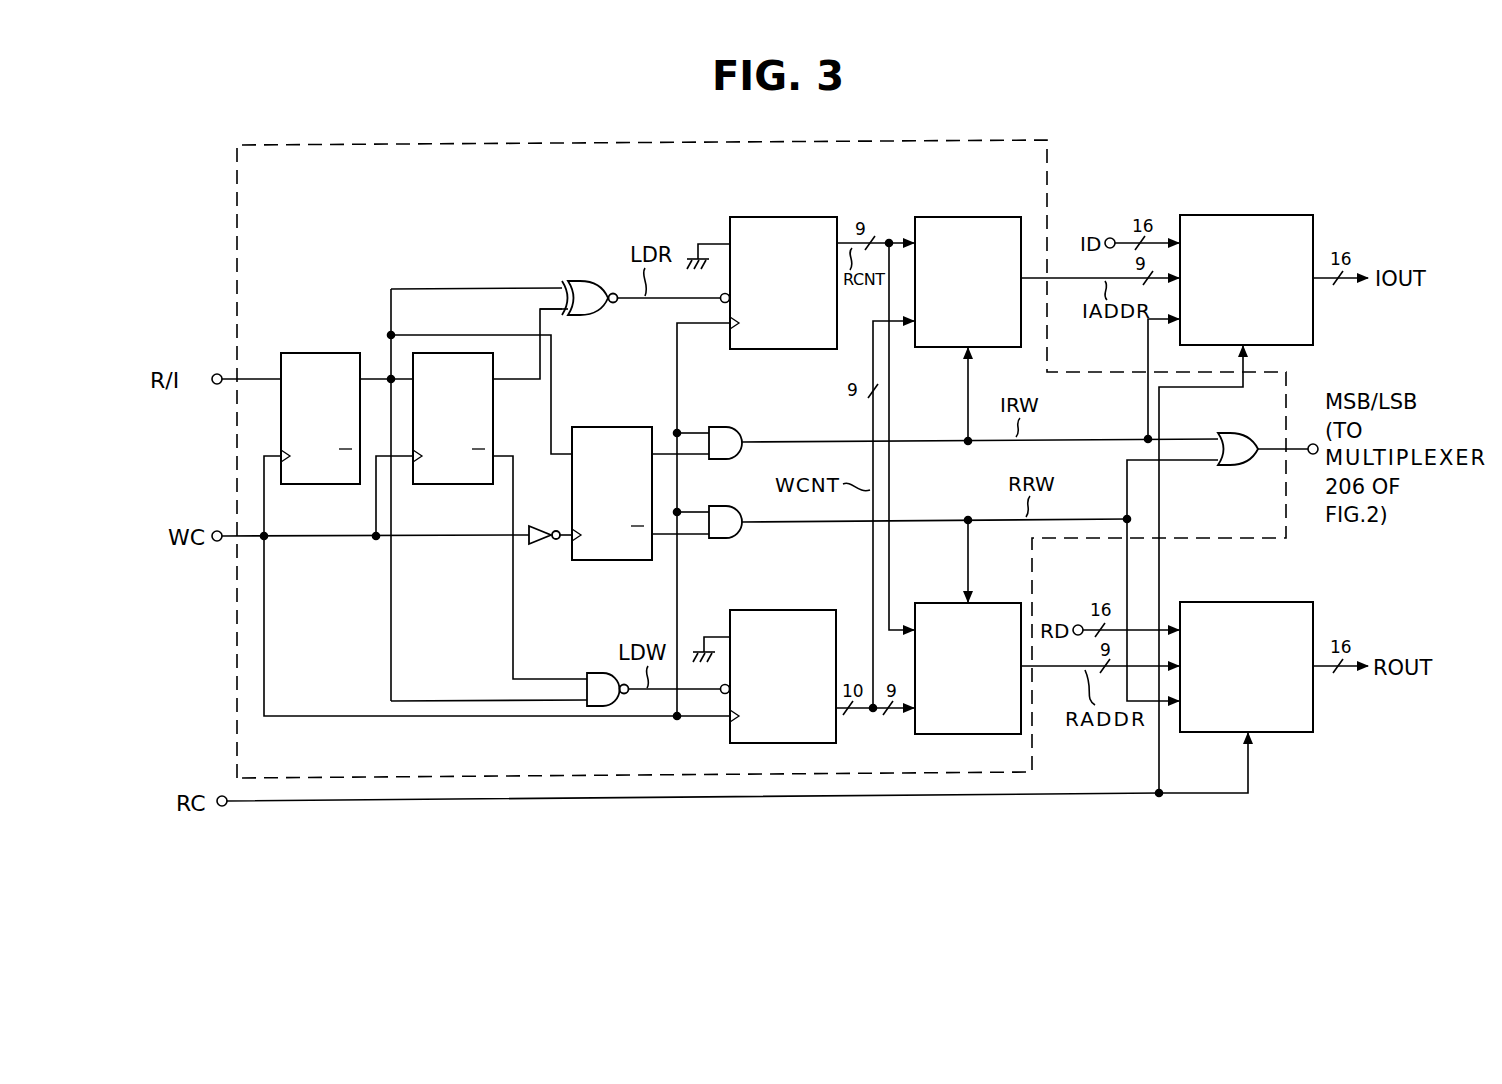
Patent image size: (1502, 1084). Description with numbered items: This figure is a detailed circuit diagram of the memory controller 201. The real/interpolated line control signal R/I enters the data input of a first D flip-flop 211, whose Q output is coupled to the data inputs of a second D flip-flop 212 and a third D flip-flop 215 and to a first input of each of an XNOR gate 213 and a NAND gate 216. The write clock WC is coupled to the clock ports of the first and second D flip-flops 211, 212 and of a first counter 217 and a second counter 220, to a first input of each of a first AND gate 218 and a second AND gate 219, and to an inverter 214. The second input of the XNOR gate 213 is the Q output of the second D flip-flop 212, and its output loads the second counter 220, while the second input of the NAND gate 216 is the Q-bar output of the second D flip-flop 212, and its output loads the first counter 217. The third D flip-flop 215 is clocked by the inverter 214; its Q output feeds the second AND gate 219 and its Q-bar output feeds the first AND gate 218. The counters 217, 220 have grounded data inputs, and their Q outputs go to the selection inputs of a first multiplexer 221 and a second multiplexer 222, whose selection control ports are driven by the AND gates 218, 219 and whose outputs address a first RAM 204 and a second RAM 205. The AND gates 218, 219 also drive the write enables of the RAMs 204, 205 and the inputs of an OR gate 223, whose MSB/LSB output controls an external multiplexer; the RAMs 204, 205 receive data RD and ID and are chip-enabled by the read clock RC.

The memory controller 201 is at (1050, 147).
The first RAM 204 is at (1285, 602).
The second RAM 205 is at (1282, 215).
The first D flip-flop 211 is at (319, 352).
The second D flip-flop 212 is at (463, 352).
The XNOR gate 213 is at (576, 283).
The inverter 214 is at (537, 549).
The third D flip-flop 215 is at (599, 427).
The NAND gate 216 is at (592, 672).
The first counter 217 is at (808, 610).
The first AND gate 218 is at (720, 540).
The second AND gate 219 is at (718, 427).
The second counter 220 is at (797, 217).
The first multiplexer 221 is at (1003, 603).
The second multiplexer 222 is at (970, 217).
The OR gate 223 is at (1226, 466).